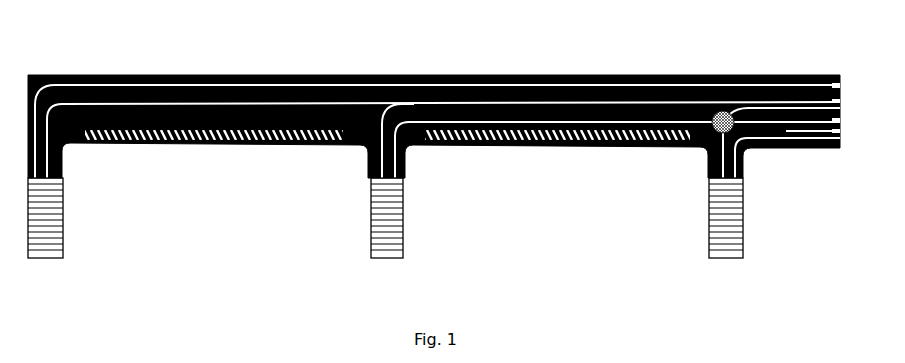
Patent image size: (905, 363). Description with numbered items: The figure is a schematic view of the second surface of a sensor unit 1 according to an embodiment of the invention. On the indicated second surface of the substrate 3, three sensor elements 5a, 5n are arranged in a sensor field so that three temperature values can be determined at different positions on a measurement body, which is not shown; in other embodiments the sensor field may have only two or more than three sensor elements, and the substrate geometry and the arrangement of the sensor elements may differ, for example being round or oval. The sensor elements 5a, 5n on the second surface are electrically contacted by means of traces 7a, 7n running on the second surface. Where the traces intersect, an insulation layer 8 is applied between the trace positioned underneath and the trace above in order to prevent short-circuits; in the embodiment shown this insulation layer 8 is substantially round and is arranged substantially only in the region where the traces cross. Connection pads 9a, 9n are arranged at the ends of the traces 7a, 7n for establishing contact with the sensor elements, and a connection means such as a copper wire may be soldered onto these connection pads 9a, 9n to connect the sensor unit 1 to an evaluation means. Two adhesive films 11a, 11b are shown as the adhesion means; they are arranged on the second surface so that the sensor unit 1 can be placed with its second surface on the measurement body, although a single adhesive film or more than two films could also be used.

The sensor unit 1 is at (627, 58).
The substrate 3 is at (358, 145).
The sensor element 5a is at (60, 227).
The sensor element 5n is at (735, 223).
The trace 7a is at (192, 87).
The trace 7n is at (784, 146).
The insulation layer 8 is at (692, 147).
The connection pad 9a is at (814, 78).
The connection pad 9n is at (815, 148).
The adhesive film 11a is at (232, 143).
The adhesive film 11b is at (557, 147).